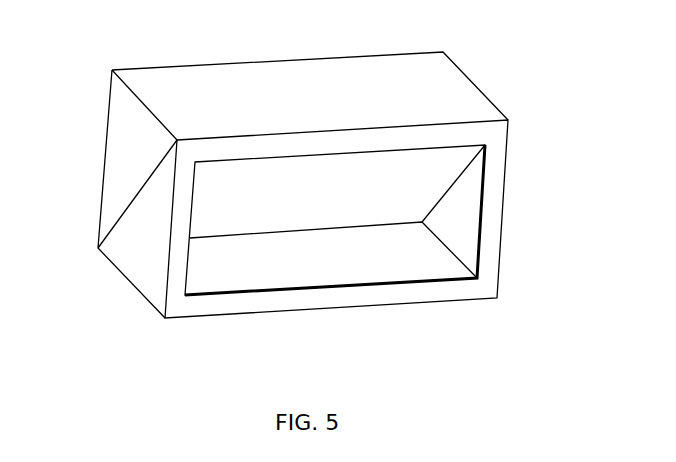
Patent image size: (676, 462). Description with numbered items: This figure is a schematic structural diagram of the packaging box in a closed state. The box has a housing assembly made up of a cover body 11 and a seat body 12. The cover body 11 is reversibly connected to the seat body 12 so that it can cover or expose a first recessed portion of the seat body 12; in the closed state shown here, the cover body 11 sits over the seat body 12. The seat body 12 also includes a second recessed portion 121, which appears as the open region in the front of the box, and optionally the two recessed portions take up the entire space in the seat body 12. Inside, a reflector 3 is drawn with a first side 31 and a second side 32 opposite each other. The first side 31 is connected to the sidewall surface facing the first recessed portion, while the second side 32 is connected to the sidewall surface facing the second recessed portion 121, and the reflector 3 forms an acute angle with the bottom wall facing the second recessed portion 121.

The cover body 11 is at (120, 153).
The seat body 12 is at (153, 220).
The second recessed portion 121 is at (282, 268).
The reflector 3 is at (399, 207).
The first side 31 is at (422, 222).
The second side 32 is at (567, 235).